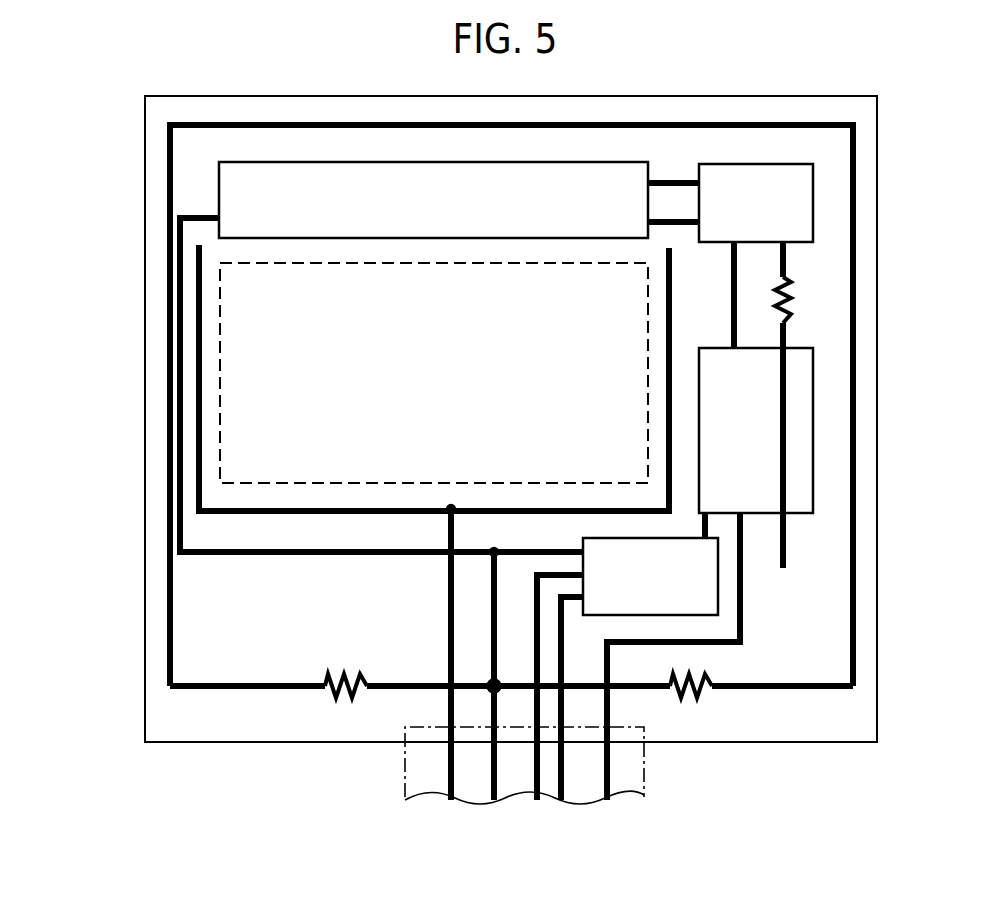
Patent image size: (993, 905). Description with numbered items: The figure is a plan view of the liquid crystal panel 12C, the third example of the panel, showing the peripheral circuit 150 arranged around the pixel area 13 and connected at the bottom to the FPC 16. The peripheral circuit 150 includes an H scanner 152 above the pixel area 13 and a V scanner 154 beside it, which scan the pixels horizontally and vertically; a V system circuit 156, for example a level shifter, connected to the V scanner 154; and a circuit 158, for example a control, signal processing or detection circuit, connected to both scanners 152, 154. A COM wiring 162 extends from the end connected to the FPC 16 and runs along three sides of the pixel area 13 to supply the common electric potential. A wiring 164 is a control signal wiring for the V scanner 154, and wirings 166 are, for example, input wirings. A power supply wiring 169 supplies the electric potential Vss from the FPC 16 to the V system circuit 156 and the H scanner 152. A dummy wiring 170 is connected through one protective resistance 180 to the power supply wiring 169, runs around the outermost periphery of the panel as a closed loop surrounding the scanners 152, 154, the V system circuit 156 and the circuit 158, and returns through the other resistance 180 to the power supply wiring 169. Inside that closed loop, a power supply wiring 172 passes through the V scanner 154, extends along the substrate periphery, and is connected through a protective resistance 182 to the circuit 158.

The liquid crystal panel 12C is at (145, 138).
The peripheral circuit 150 is at (203, 646).
The H scanner 152 is at (219, 198).
The V scanner 154 is at (813, 380).
The V system circuit 156 is at (693, 616).
The circuit 158 is at (813, 202).
The COM wiring 162 is at (477, 517).
The wiring 164 is at (743, 582).
The wiring 166 is at (537, 598).
The power supply wiring 169 is at (494, 720).
The dummy wiring 170 is at (213, 689).
The power supply wiring 172 is at (813, 487).
The protective resistance 180 is at (337, 700).
The protective resistance 182 is at (790, 293).
The pixel area 13 is at (270, 484).
The FPC 16 is at (404, 785).